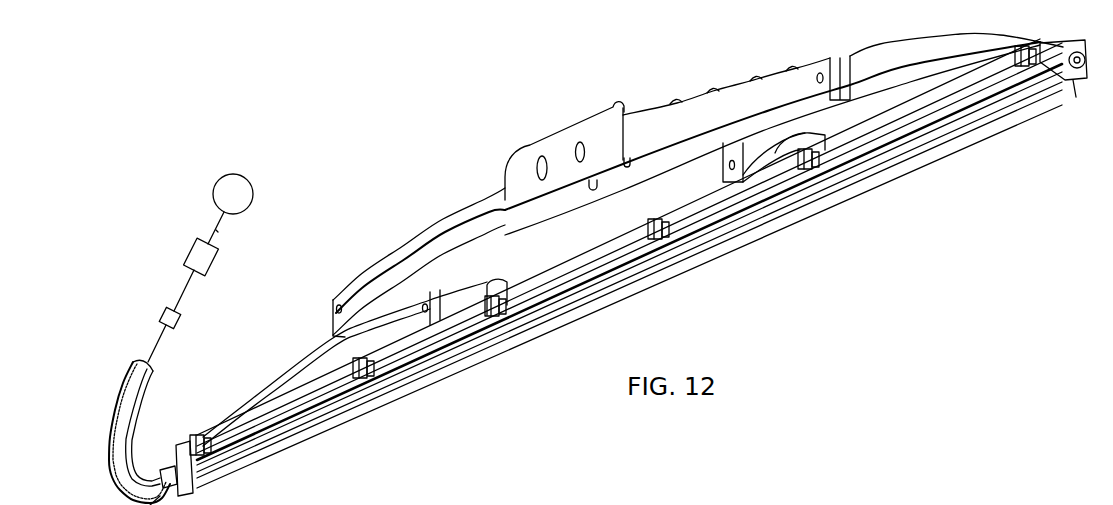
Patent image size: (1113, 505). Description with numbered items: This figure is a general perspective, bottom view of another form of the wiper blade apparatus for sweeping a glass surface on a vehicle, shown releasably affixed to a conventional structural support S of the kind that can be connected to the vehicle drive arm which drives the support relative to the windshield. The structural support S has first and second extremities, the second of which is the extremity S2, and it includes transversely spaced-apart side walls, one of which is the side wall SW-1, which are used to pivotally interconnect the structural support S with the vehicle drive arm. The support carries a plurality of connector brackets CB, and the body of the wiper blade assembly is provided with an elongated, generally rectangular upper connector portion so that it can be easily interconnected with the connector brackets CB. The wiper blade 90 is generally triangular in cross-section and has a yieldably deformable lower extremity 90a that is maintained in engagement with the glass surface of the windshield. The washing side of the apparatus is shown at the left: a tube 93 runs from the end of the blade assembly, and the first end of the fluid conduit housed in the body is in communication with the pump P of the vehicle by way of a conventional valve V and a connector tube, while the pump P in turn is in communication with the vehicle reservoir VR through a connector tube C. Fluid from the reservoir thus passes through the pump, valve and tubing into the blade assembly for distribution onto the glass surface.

The vehicle reservoir VR is at (221, 191).
The pump P is at (192, 253).
The connector tube C is at (216, 230).
The valve V is at (175, 317).
The fluid hose 93 is at (132, 377).
The structural support S is at (447, 218).
The side wall SW-1 is at (557, 142).
The second extremity of structural support S2 is at (882, 44).
The wiper blade 90 is at (718, 247).
The lower extremity 90a is at (301, 444).
The connector brackets CB is at (357, 380).